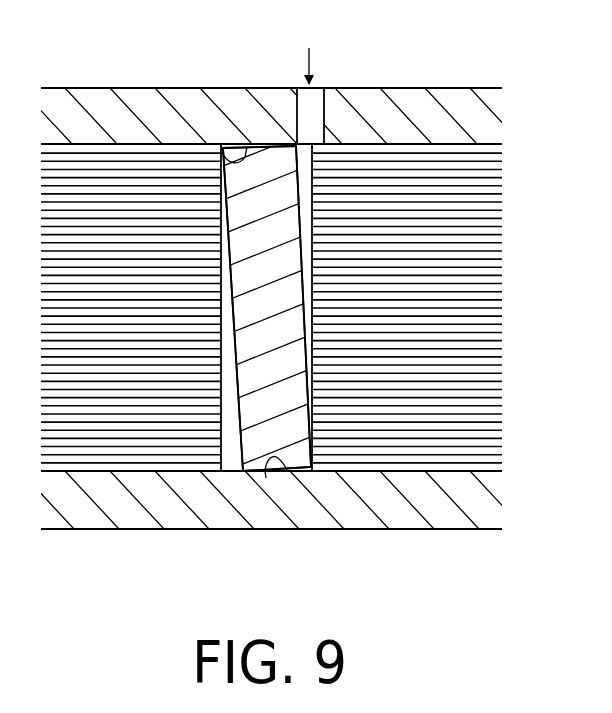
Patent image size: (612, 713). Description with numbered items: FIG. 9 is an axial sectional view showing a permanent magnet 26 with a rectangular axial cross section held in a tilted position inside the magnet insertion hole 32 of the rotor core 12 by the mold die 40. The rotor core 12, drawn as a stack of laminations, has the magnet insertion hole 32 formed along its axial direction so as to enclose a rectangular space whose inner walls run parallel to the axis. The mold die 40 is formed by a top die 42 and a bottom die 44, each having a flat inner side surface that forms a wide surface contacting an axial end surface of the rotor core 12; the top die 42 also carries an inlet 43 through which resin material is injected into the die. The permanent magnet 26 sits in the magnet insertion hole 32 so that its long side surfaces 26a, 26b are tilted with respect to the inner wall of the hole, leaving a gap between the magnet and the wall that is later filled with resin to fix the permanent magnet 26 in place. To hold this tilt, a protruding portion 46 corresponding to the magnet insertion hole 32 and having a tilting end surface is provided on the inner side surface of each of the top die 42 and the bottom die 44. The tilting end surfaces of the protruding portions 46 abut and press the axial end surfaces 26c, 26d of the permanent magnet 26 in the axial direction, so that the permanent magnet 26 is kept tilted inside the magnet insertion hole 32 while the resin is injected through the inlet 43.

The rotor core 12 is at (513, 211).
The permanent magnet 26 is at (236, 141).
The long side surface 26a is at (312, 177).
The long side surface 26b is at (236, 413).
The axial end surface 26c is at (270, 149).
The axial end surface 26d is at (295, 468).
The magnet insertion hole 32 is at (221, 440).
The mold die 40 is at (484, 85).
The top die 42 is at (450, 88).
The inlet 43 is at (324, 113).
The bottom die 44 is at (478, 505).
The protruding portion 46 is at (223, 150).